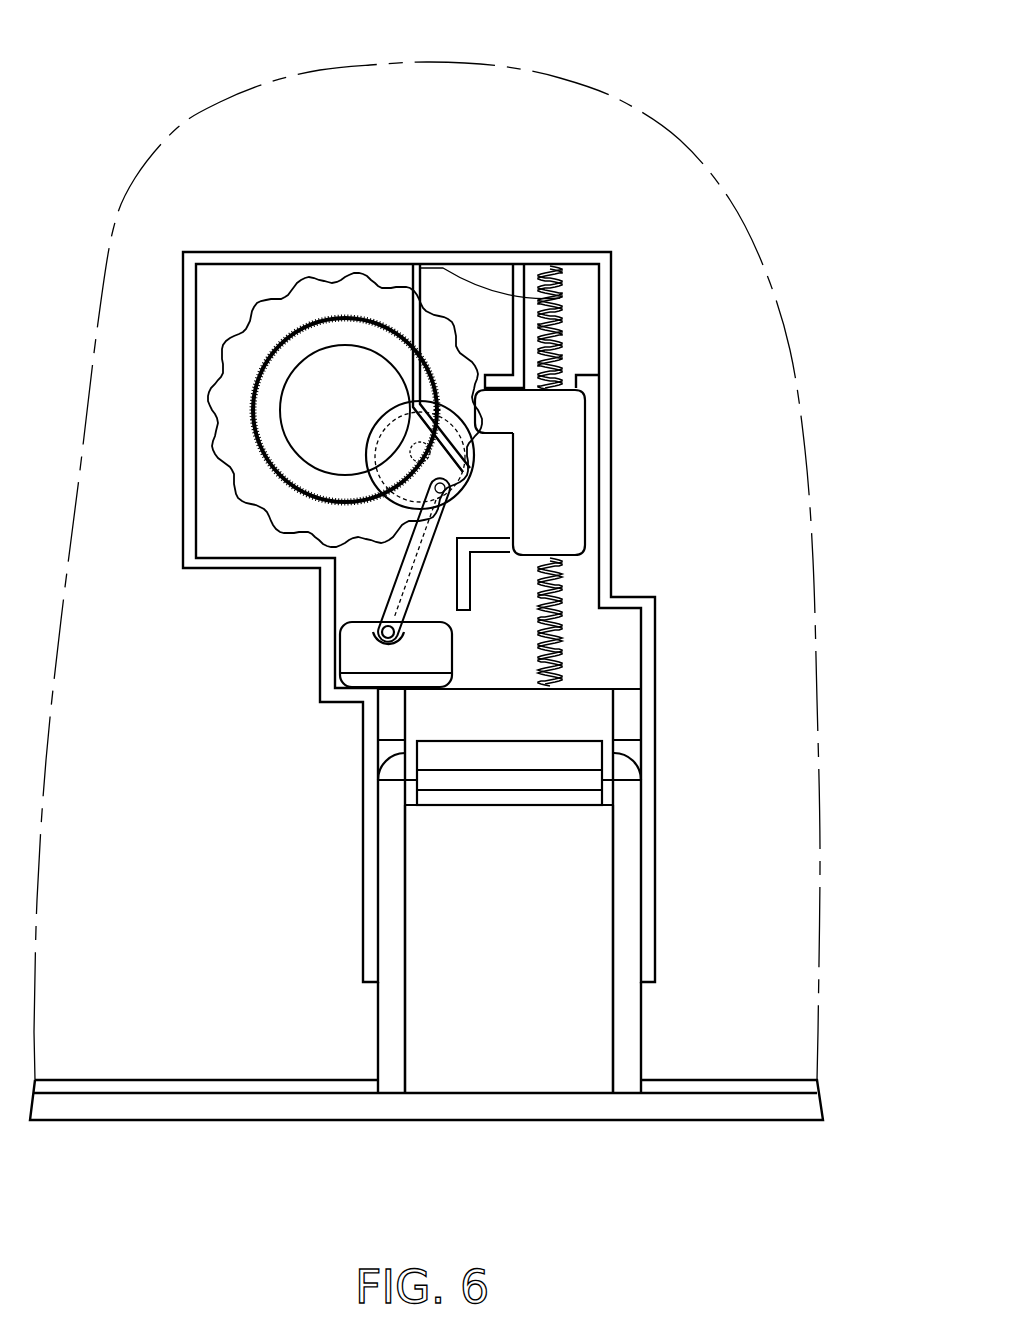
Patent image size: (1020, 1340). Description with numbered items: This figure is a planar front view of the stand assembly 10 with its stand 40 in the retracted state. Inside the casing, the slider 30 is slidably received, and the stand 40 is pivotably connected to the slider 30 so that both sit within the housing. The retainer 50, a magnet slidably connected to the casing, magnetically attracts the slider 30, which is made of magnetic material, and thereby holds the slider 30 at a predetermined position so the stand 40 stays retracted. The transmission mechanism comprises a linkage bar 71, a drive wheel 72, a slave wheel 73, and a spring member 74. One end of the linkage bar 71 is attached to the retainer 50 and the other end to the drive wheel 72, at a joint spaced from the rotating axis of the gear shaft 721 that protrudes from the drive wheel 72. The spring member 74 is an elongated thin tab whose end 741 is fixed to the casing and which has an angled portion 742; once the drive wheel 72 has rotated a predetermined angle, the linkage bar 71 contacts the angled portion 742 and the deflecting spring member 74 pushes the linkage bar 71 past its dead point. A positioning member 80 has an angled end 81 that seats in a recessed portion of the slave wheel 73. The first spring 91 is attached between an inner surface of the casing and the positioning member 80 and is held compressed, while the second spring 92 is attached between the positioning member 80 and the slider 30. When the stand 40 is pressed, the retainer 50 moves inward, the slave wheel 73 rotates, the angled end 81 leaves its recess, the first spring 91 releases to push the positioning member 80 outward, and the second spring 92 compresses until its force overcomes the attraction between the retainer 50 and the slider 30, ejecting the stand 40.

The stand assembly 10 is at (123, 60).
The slider 30 is at (555, 712).
The stand 40 is at (565, 875).
The retainer 50 is at (350, 640).
The linkage bar 71 is at (410, 567).
The drive wheel 72 is at (380, 442).
The slave wheel 73 is at (282, 500).
The gear shaft 721 is at (418, 453).
The spring member 74 is at (712, 282).
The end 741 is at (560, 298).
The angled portion 742 is at (440, 425).
The positioning member 80 is at (557, 482).
The angled end 81 is at (488, 425).
The first spring 91 is at (552, 263).
The second spring 92 is at (555, 582).